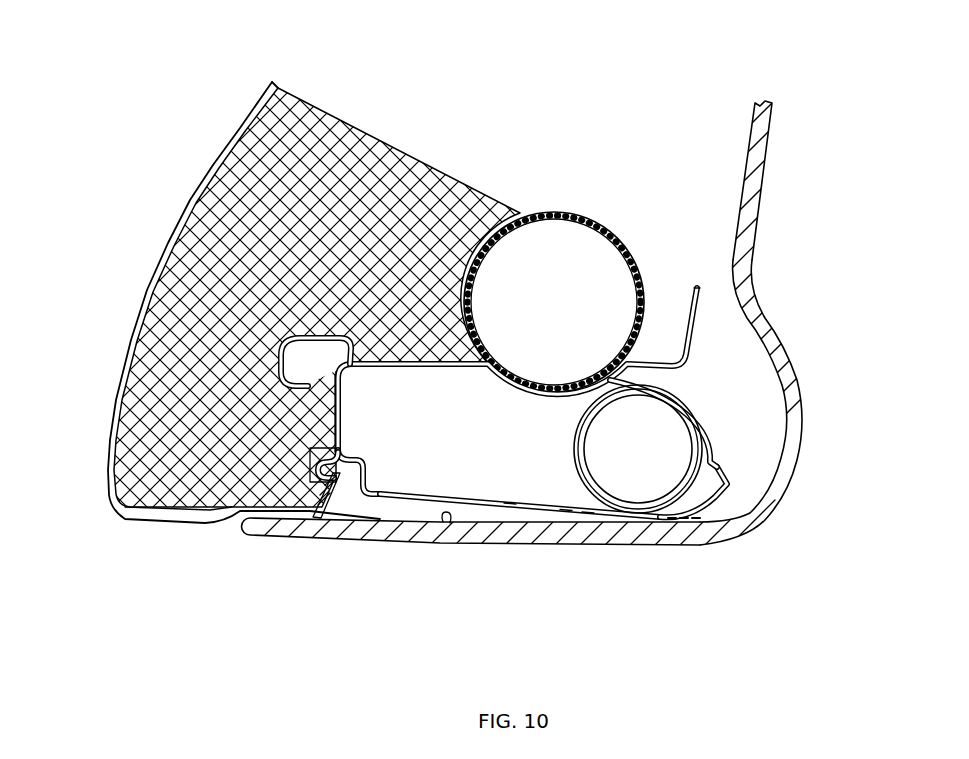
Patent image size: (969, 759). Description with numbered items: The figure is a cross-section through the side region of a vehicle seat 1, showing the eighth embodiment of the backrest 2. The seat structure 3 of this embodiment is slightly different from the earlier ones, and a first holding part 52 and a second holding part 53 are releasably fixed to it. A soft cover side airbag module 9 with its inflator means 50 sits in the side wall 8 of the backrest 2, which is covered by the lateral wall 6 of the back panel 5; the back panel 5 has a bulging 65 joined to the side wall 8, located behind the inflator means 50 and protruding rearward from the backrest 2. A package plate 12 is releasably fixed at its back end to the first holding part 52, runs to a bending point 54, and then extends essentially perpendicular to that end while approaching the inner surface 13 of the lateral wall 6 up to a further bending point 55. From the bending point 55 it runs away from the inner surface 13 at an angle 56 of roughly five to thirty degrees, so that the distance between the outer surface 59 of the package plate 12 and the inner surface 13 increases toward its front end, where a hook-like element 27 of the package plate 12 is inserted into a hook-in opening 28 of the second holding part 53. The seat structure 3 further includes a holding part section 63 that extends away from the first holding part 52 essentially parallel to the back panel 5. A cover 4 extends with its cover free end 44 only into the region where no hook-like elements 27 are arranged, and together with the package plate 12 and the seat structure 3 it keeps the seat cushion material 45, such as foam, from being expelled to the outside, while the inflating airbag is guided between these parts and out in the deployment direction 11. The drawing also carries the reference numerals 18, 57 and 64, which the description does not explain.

The seat 1 is at (207, 113).
The backrest 2 is at (307, 338).
The seat structure 3 is at (555, 200).
The cover 4 is at (160, 270).
The back panel 5 is at (773, 179).
The lateral wall 6 is at (534, 542).
The side wall 8 is at (417, 567).
The soft cover side airbag module 9 is at (497, 460).
The deployment direction 11 is at (457, 418).
The package plate 12 is at (567, 523).
The inner surface 13 is at (450, 523).
The foam edge 18 is at (397, 482).
The hook-like element 27 is at (359, 438).
The hook-in opening 28 is at (323, 452).
The cover free end 44 is at (342, 503).
The seat cushion material 45 is at (357, 150).
The inflator means 50 is at (723, 520).
The first holding part 52 is at (690, 397).
The second holding part 53 is at (333, 426).
The bending point 54 is at (735, 490).
The further bending point 55 is at (653, 519).
The angle 56 is at (597, 514).
The sheet metal bracket 57 is at (373, 391).
The outer surface 59 is at (510, 508).
The holding part section 63 is at (700, 318).
The weld seam 64 is at (588, 521).
The bulging 65 is at (798, 463).